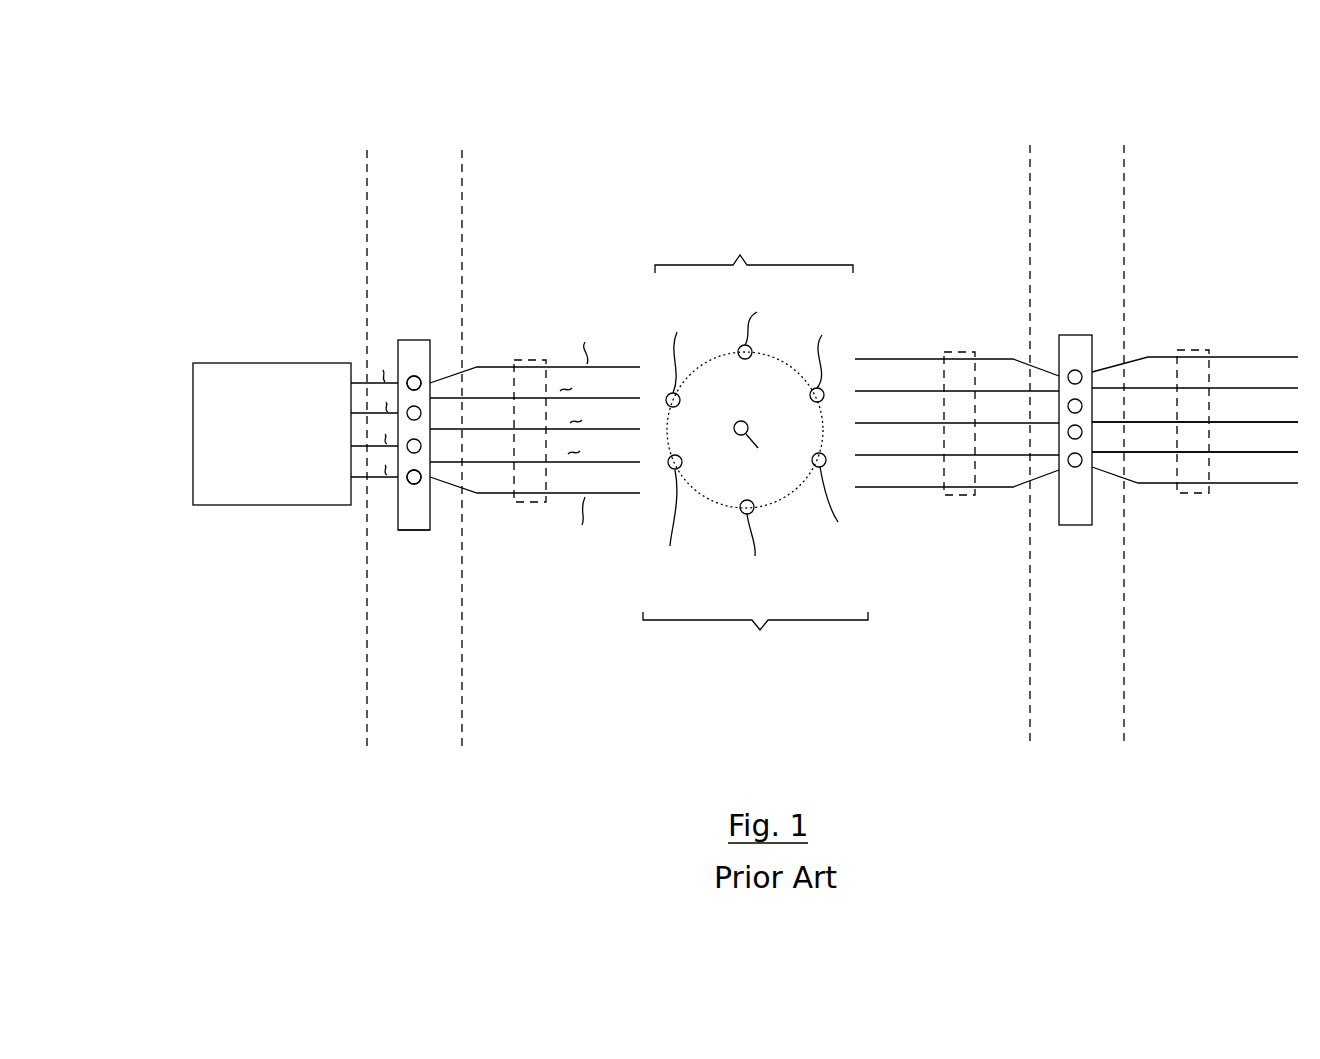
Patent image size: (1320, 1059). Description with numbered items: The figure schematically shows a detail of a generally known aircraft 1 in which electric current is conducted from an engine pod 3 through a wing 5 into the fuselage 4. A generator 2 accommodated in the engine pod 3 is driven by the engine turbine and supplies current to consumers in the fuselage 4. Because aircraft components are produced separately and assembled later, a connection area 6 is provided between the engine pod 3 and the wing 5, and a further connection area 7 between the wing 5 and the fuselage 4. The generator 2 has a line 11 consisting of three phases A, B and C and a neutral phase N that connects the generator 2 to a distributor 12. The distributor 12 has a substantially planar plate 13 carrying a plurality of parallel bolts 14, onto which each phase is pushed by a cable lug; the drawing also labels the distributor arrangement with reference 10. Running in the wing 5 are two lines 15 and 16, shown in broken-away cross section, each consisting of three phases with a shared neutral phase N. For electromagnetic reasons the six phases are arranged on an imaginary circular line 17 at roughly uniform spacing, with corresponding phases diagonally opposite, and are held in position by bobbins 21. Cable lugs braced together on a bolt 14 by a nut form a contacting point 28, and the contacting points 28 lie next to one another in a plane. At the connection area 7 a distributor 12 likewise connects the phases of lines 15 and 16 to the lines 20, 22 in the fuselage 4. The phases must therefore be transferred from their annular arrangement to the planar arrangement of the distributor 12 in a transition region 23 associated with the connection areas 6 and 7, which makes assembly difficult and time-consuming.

The aircraft 1 is at (250, 90).
The generator 2 is at (232, 480).
The engine pod 3 is at (201, 248).
The fuselage 4 is at (1300, 245).
The wing 5 is at (752, 163).
The connection area 6 is at (418, 245).
The connection area 7 is at (1082, 233).
The plug connector 10 is at (419, 320).
The line 11 is at (378, 492).
The distributor 12 is at (414, 535).
The plate 13 is at (410, 343).
The bolts 14 is at (417, 378).
The line 15 is at (754, 250).
The line 16 is at (755, 641).
The imaginary circular line 17 is at (792, 497).
The line 20 is at (1268, 493).
The bobbins 21 is at (522, 358).
The line 22 is at (1195, 437).
The transition region 23 is at (470, 499).
The contacting point 28 is at (414, 430).